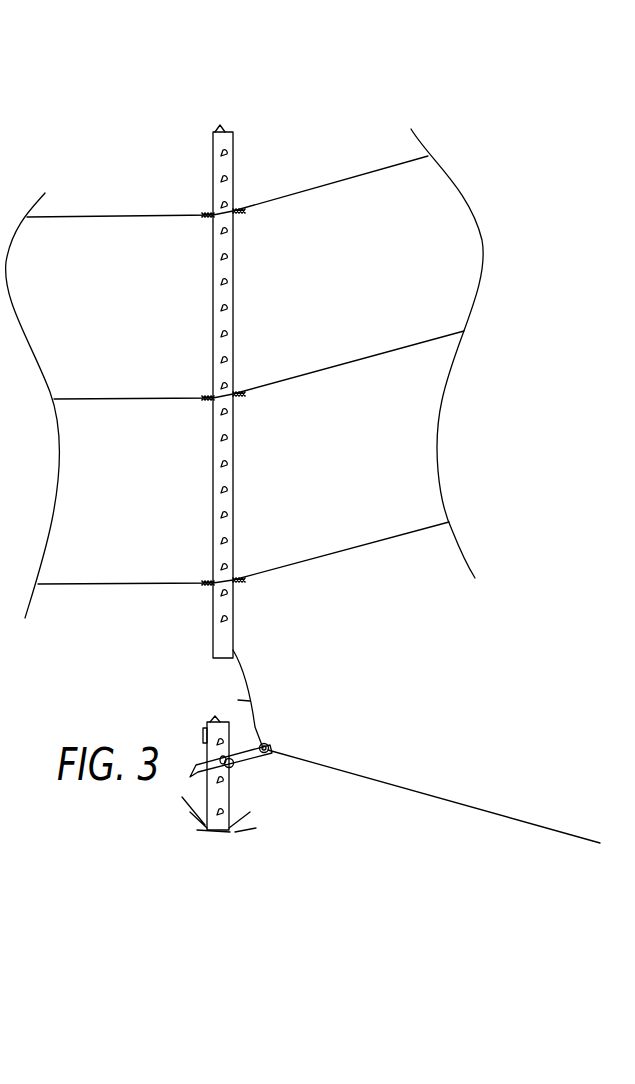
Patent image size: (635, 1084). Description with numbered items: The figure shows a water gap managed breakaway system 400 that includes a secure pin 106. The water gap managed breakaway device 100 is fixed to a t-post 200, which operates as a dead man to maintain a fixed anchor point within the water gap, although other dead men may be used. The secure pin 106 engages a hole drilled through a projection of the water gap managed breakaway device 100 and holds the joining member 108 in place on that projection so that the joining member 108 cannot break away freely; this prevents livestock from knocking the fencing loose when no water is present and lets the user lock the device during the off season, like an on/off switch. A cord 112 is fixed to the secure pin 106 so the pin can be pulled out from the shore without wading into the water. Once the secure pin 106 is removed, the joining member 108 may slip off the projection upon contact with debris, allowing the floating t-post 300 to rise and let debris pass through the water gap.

The water gap managed breakaway system 400 is at (350, 112).
The floating t-post 300 is at (233, 318).
The water gap managed breakaway device 100 is at (354, 746).
The joining member 108 is at (250, 683).
The secure pin 106 is at (268, 748).
The cord 112 is at (367, 773).
The t-post 200 is at (220, 803).